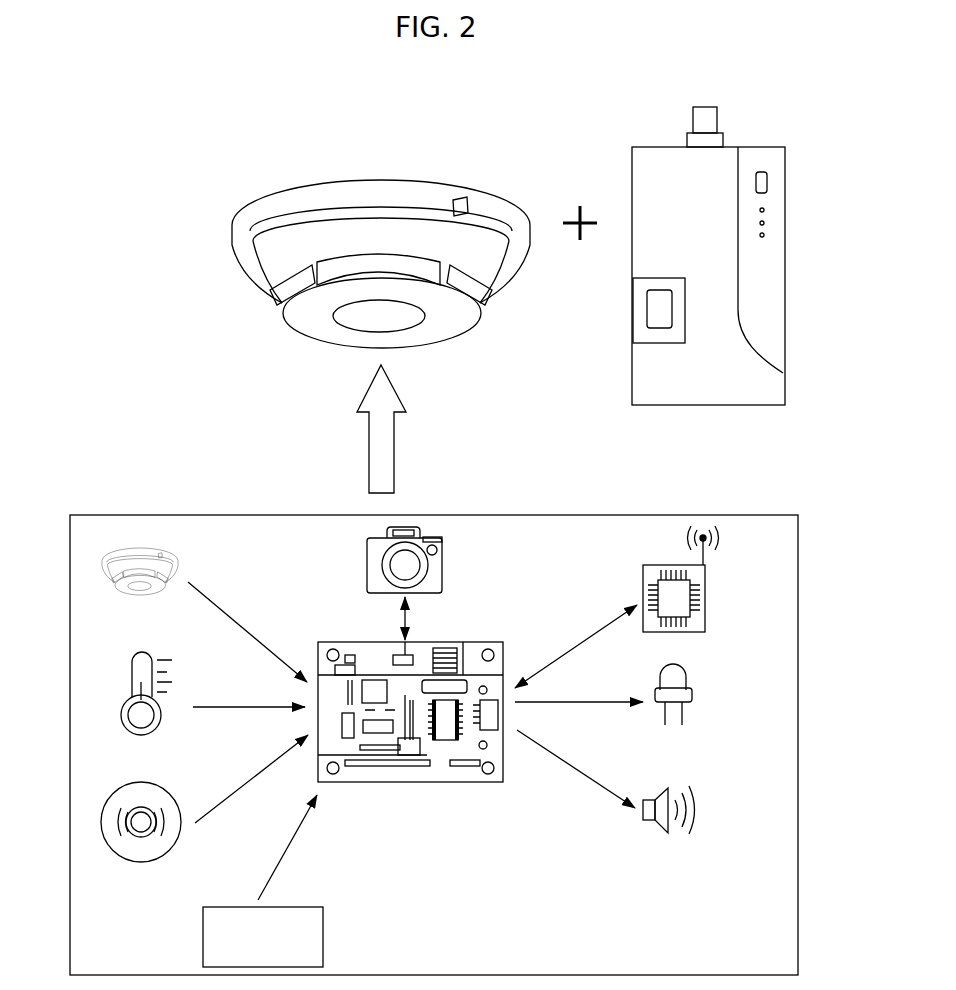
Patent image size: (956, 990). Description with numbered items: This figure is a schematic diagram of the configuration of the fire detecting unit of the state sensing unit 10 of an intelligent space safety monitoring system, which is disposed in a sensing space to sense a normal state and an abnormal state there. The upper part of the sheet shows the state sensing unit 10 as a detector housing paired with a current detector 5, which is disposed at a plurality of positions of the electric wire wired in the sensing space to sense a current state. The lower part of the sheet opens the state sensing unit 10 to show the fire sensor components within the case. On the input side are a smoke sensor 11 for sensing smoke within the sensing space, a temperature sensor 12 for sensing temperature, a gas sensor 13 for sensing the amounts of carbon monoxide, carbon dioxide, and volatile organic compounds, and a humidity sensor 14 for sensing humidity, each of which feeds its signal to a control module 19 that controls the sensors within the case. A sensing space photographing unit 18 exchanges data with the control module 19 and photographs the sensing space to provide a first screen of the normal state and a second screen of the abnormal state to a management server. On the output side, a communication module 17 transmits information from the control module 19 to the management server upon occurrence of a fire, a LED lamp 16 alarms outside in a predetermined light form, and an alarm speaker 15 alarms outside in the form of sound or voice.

The current detector 5 is at (760, 147).
The state sensing unit 10 is at (382, 187).
The smoke sensor 11 is at (177, 560).
The temperature sensor 12 is at (147, 647).
The gas sensor 13 is at (165, 787).
The humidity sensor 14 is at (325, 937).
The alarm speaker 15 is at (662, 827).
The LED lamp 16 is at (688, 682).
The communication module 17 is at (707, 598).
The sensing space photographing unit 18 is at (443, 563).
The control module 19 is at (345, 642).